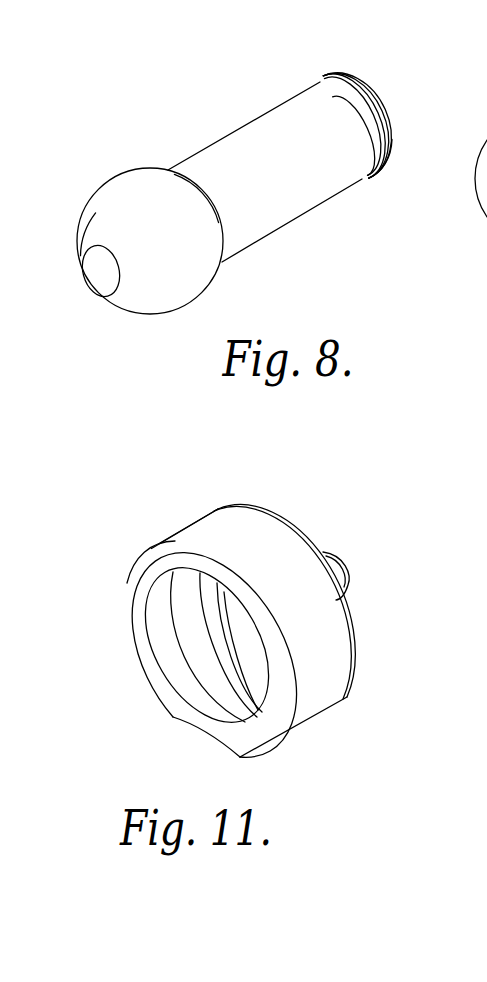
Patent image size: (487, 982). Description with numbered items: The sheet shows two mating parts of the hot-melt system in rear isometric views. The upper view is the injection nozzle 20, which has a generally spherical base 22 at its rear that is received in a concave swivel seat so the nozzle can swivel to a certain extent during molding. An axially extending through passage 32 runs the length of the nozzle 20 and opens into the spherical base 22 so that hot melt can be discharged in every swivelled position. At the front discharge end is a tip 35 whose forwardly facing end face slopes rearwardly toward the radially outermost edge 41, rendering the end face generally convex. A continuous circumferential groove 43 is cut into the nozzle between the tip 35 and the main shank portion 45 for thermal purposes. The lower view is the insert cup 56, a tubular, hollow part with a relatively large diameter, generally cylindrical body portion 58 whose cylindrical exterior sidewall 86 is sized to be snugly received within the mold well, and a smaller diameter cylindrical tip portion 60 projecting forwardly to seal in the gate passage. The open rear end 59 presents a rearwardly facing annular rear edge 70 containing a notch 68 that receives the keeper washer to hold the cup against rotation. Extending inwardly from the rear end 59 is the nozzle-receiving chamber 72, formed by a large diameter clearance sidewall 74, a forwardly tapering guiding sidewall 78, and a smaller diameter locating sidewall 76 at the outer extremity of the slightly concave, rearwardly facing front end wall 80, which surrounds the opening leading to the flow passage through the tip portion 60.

In FIG. 8, the nozzle 20 is at (220, 132).
In FIG. 8, the spherical base 22 is at (182, 288).
In FIG. 8, the through passage 32 is at (104, 278).
In FIG. 8, the tip 35 is at (380, 100).
In FIG. 8, the radially outermost edge 41 is at (381, 174).
In FIG. 8, the circumferential groove 43 is at (335, 88).
In FIG. 8, the main shank portion 45 is at (273, 220).
In FIG. 11, the insert cup 56 is at (293, 505).
In FIG. 11, the body portion 58 is at (205, 512).
In FIG. 11, the rear end 59 is at (143, 556).
In FIG. 11, the tip portion 60 is at (350, 580).
In FIG. 11, the notch 68 is at (205, 732).
In FIG. 11, the annular rear edge 70 is at (138, 632).
In FIG. 11, the nozzle-receiving chamber 72 is at (187, 680).
In FIG. 11, the clearance sidewall 74 is at (156, 580).
In FIG. 11, the locating sidewall 76 is at (230, 657).
In FIG. 11, the guiding sidewall 78 is at (187, 590).
In FIG. 11, the front end wall 80 is at (240, 620).
In FIG. 11, the exterior sidewall 86 is at (197, 533).